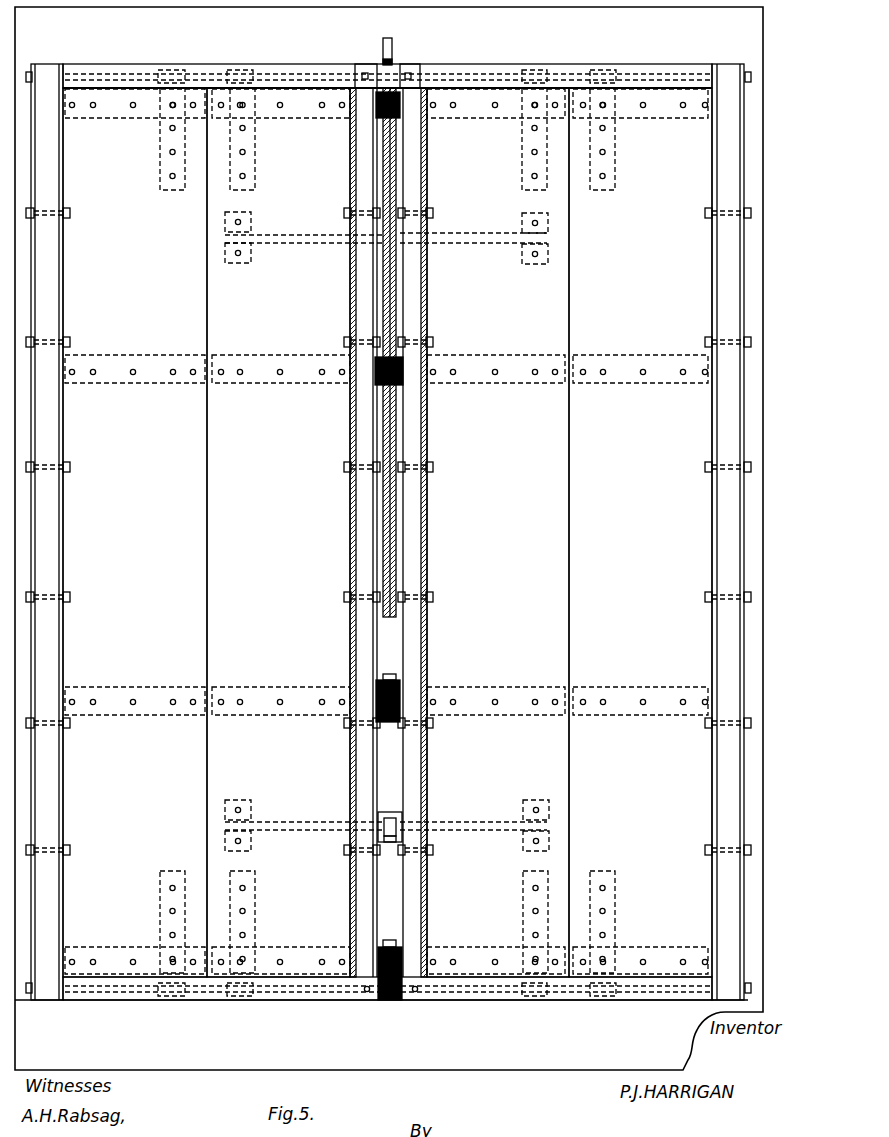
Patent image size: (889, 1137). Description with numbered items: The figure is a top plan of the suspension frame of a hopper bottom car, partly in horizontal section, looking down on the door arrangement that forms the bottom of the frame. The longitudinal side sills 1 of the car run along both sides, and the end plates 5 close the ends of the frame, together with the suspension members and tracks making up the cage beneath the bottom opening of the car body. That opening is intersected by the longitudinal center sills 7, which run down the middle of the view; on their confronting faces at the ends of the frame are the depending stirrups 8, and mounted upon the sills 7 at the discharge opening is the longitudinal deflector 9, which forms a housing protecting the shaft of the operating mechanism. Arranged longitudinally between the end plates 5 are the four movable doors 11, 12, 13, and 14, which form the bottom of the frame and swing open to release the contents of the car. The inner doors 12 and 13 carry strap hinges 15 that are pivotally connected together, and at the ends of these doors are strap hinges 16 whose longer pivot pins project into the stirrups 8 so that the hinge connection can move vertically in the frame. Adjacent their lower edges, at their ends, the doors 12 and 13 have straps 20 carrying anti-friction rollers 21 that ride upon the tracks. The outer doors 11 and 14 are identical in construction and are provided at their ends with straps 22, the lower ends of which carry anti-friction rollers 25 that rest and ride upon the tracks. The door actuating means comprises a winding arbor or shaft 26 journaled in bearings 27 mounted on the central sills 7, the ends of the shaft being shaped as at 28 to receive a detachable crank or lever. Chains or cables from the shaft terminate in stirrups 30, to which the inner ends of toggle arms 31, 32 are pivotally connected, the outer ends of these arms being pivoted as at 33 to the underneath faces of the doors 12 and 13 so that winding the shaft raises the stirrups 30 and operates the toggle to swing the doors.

The longitudinal side sill 1 is at (45, 75).
The end plate 5 is at (278, 70).
The longitudinal center sill 7 is at (427, 156).
The stirrup 8 is at (378, 1002).
The deflector 9 is at (350, 153).
The door 11 is at (135, 532).
The door 12 is at (278, 532).
The door 13 is at (498, 532).
The door 14 is at (640, 532).
The strap hinge 15 is at (269, 383).
The strap hinge 16 is at (254, 170).
The strap 20 is at (172, 190).
The anti-friction roller 21 is at (242, 70).
The strap 22 is at (103, 118).
The anti-friction roller 25 is at (160, 70).
The winding shaft 26 is at (400, 527).
The bearing 27 is at (402, 70).
The shaped shaft end 28 is at (383, 42).
The stirrup 30 is at (388, 812).
The toggle arm 31 is at (276, 245).
The toggle arm 32 is at (470, 236).
The pivotal connection 33 is at (536, 264).